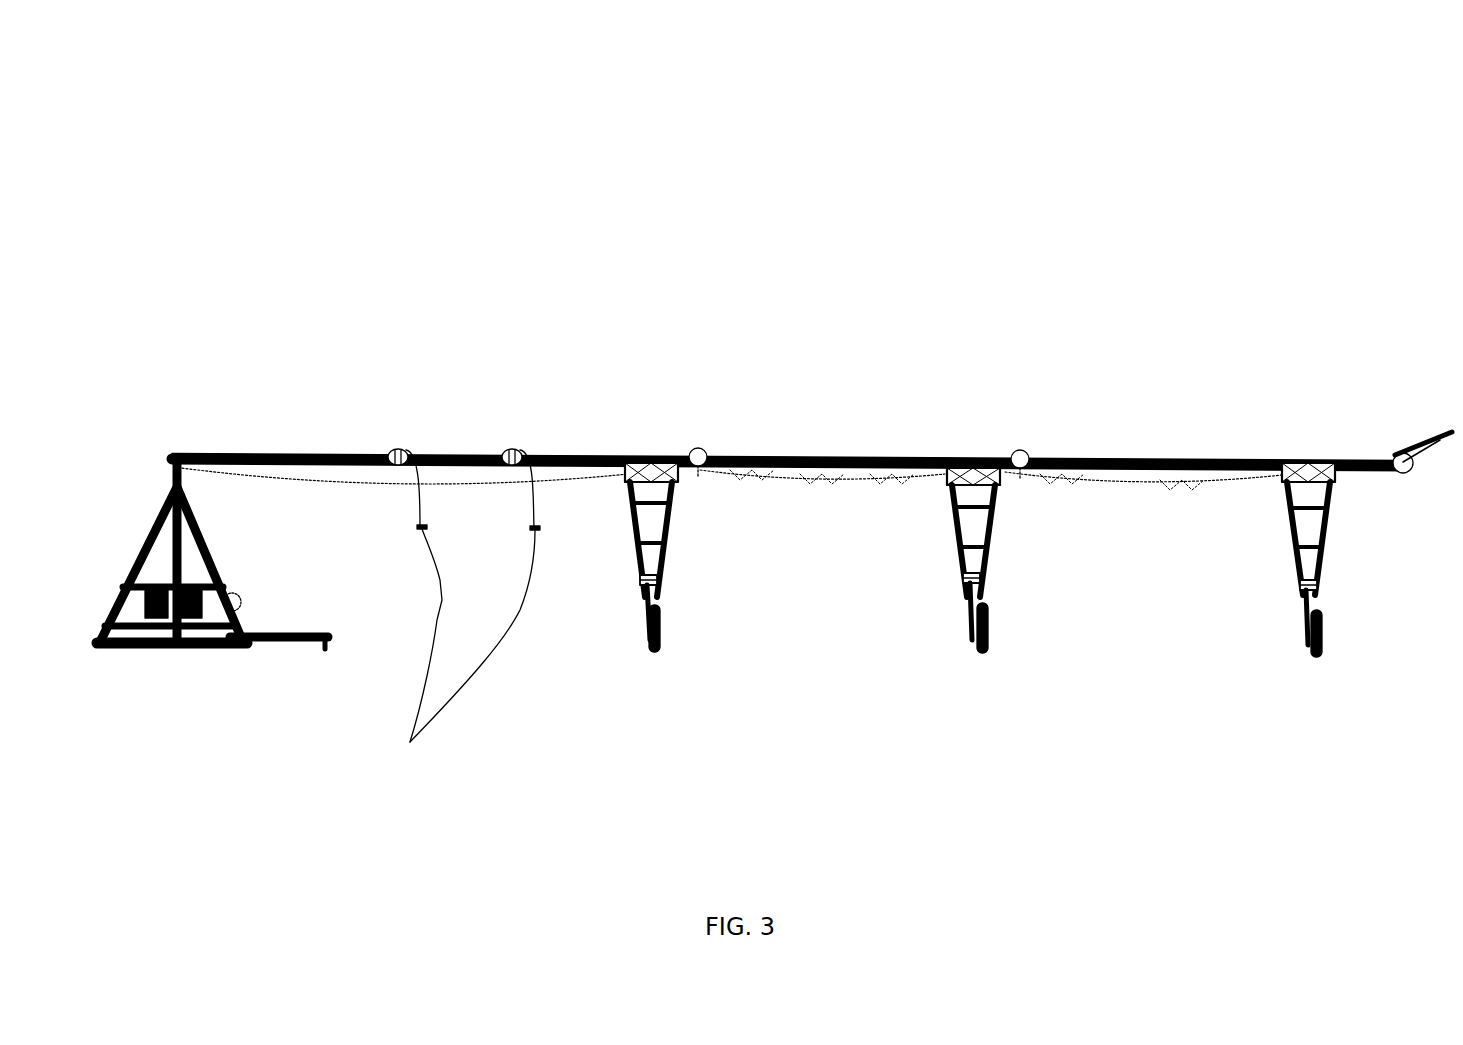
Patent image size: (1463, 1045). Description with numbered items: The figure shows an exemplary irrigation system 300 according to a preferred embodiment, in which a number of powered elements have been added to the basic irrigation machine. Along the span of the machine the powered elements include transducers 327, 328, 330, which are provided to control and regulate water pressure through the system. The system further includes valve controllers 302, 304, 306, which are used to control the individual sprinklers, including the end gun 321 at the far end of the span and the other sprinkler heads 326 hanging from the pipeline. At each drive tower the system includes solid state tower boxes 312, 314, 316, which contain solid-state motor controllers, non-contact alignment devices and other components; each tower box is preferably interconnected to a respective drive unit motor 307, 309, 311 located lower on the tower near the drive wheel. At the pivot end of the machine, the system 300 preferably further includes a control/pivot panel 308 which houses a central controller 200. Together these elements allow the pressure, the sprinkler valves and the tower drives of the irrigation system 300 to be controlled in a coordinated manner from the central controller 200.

The system 300 is at (803, 84).
The central controller 200 is at (205, 618).
The control/pivot panel 308 is at (198, 603).
The transducer 327 is at (242, 602).
The valve controller 302 is at (398, 452).
The valve controller 304 is at (512, 452).
The sprinkler heads 326 is at (460, 650).
The solid state tower box 312 is at (637, 462).
The drive unit motor 307 is at (657, 580).
The transducer 328 is at (699, 448).
The solid state tower box 314 is at (963, 466).
The drive unit motor 309 is at (981, 578).
The transducer 330 is at (1020, 450).
The solid state tower box 316 is at (1296, 462).
The drive unit motor 311 is at (1318, 585).
The valve controller 306 is at (1400, 452).
The end gun 321 is at (1437, 434).